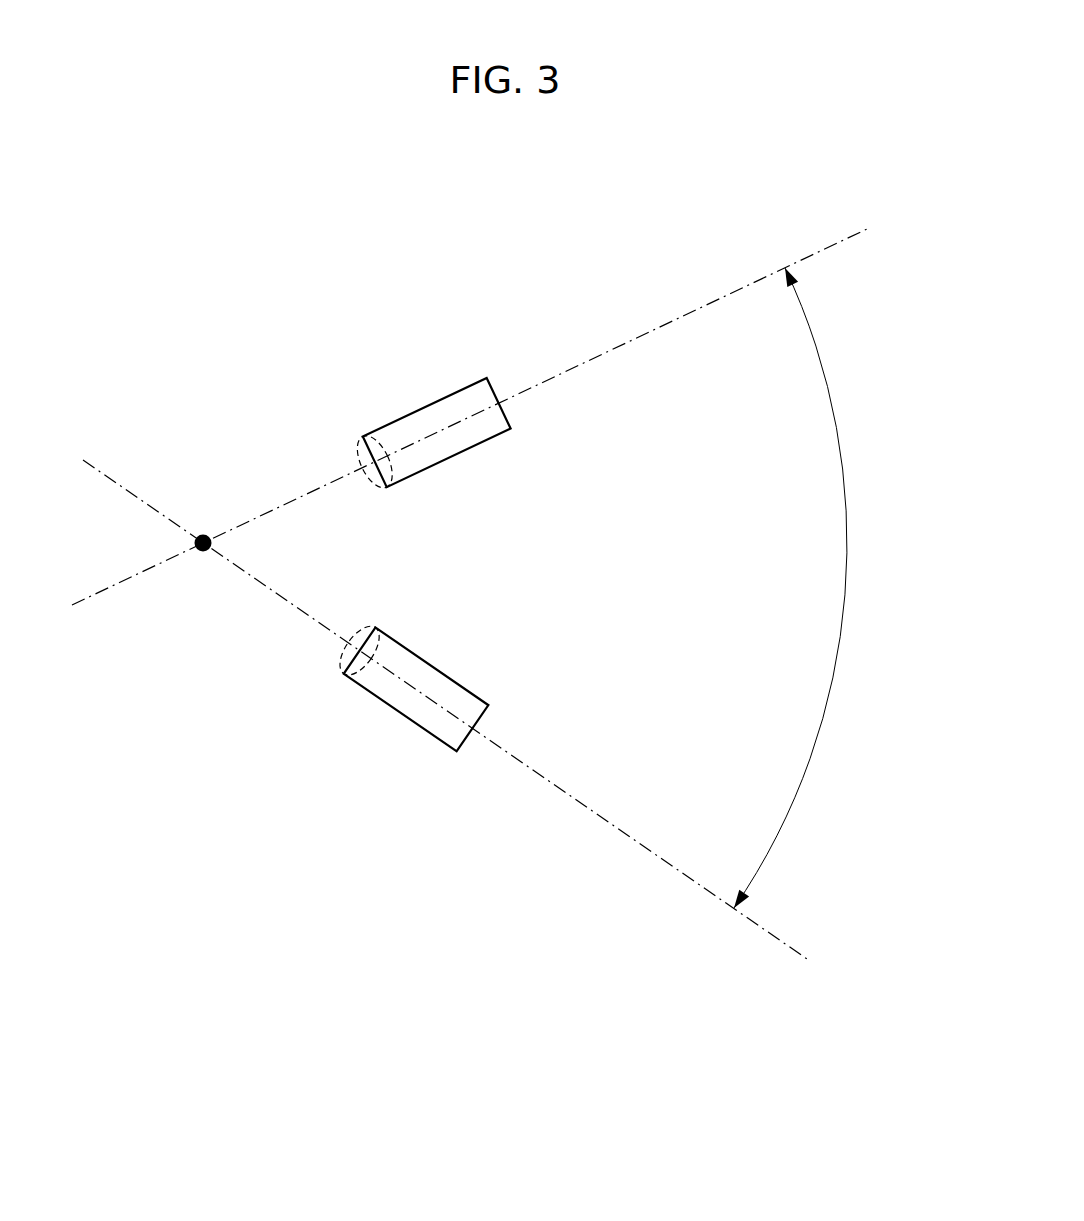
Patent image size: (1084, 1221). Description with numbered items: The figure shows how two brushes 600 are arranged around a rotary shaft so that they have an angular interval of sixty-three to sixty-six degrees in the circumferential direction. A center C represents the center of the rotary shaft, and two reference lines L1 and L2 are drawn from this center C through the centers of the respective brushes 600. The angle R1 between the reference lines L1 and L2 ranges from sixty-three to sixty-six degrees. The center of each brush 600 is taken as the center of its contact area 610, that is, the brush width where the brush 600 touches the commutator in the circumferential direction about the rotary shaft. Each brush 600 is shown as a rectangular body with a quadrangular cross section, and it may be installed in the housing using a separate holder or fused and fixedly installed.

The brush 600 is at (466, 352).
The contact area 610 is at (385, 450).
The center of the rotary shaft C is at (203, 534).
The reference line L1 is at (848, 233).
The reference line L2 is at (797, 957).
The angle R1 is at (852, 547).